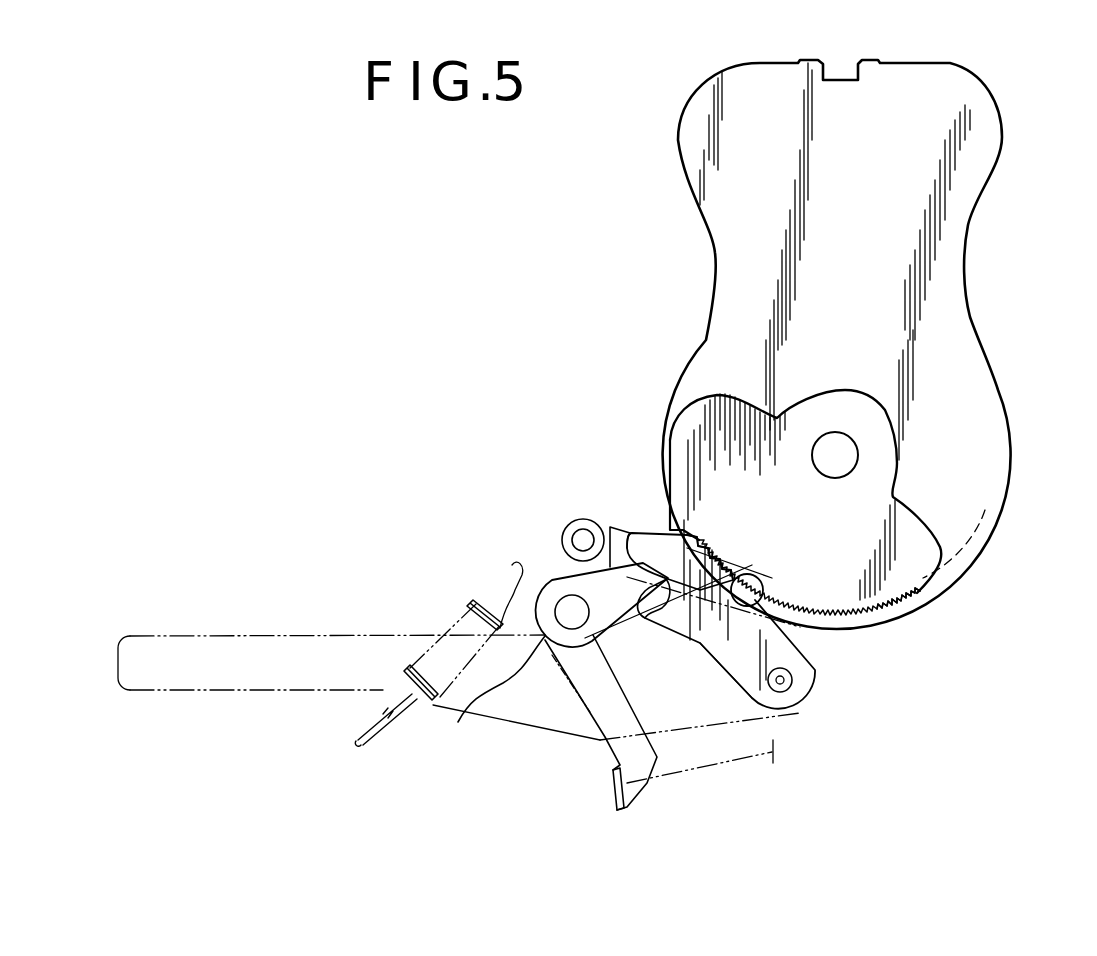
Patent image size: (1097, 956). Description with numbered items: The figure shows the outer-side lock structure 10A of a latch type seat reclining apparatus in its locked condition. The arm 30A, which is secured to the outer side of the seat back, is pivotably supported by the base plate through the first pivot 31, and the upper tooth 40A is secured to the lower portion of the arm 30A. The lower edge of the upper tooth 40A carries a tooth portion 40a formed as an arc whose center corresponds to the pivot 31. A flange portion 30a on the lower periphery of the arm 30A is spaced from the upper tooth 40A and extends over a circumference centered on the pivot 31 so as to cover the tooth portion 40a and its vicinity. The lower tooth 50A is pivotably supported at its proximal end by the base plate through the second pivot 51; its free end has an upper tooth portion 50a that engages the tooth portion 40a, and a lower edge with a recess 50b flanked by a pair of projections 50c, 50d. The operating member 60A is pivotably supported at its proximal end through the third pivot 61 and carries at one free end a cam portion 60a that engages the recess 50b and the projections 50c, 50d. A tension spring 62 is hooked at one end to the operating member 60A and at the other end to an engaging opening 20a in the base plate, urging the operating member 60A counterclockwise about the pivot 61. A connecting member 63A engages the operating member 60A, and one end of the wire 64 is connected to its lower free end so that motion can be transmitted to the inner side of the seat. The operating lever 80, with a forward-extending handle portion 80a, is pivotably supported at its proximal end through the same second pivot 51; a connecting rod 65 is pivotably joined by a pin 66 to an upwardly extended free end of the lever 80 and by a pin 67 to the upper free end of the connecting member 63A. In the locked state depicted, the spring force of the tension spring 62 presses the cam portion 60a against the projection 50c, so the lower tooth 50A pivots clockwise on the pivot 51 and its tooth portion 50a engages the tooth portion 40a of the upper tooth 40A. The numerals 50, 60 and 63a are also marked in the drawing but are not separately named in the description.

The lock structure 10A is at (663, 527).
The engaging opening 20a is at (347, 742).
The arm 30A is at (1003, 137).
The flange portion 30a is at (990, 530).
The first pivot 31 is at (853, 453).
The upper tooth 40A is at (933, 515).
The tooth portion 40a is at (920, 598).
The lock lever 50 is at (726, 628).
The lower tooth 50A is at (812, 690).
The tooth portion 50a is at (700, 543).
The recess 50b is at (690, 640).
The projection 50c is at (610, 527).
The projection 50d is at (646, 612).
The second pivot 51 is at (783, 695).
The release pawl 60 is at (510, 565).
The operating member 60A is at (560, 597).
The cam portion 60a is at (638, 531).
The third pivot 61 is at (460, 718).
The tension spring 62 is at (405, 670).
The connecting member 63A is at (560, 697).
The tab of operating arm 63a is at (613, 793).
The wire 64 is at (723, 765).
The connecting rod 65 is at (598, 515).
The pin 66 is at (765, 577).
The pin 67 is at (583, 540).
The operating lever 80 is at (578, 739).
The handle portion 80a is at (262, 634).